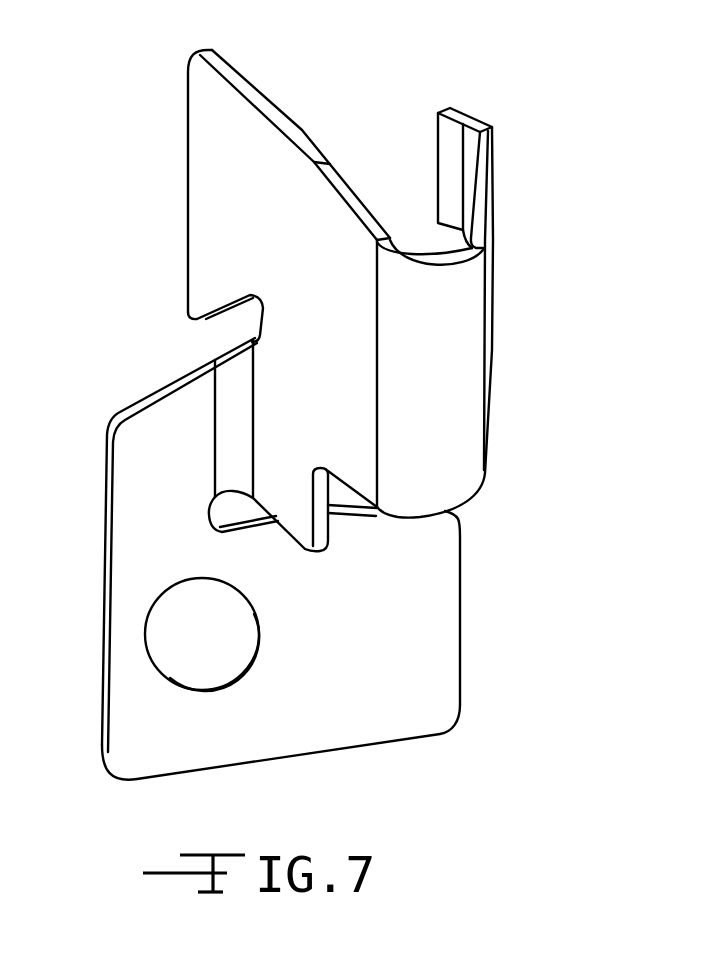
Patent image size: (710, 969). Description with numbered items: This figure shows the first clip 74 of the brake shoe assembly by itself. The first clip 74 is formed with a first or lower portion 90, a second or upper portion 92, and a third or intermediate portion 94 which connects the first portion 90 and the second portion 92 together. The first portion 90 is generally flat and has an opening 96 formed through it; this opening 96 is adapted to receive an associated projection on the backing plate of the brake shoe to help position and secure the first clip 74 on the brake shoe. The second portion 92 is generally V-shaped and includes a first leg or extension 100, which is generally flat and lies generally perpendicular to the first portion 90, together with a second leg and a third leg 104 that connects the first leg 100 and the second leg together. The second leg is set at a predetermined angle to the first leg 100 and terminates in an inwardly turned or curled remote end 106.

The first clip 74 is at (317, 415).
The first or lower portion 90 is at (452, 723).
The second or upper portion 92 is at (187, 215).
The third or intermediate portion 94 is at (206, 353).
The opening 96 is at (170, 632).
The first leg or extension 100 is at (200, 137).
The third leg 104 is at (442, 447).
The inwardly turned or curled remote end 106 is at (456, 111).